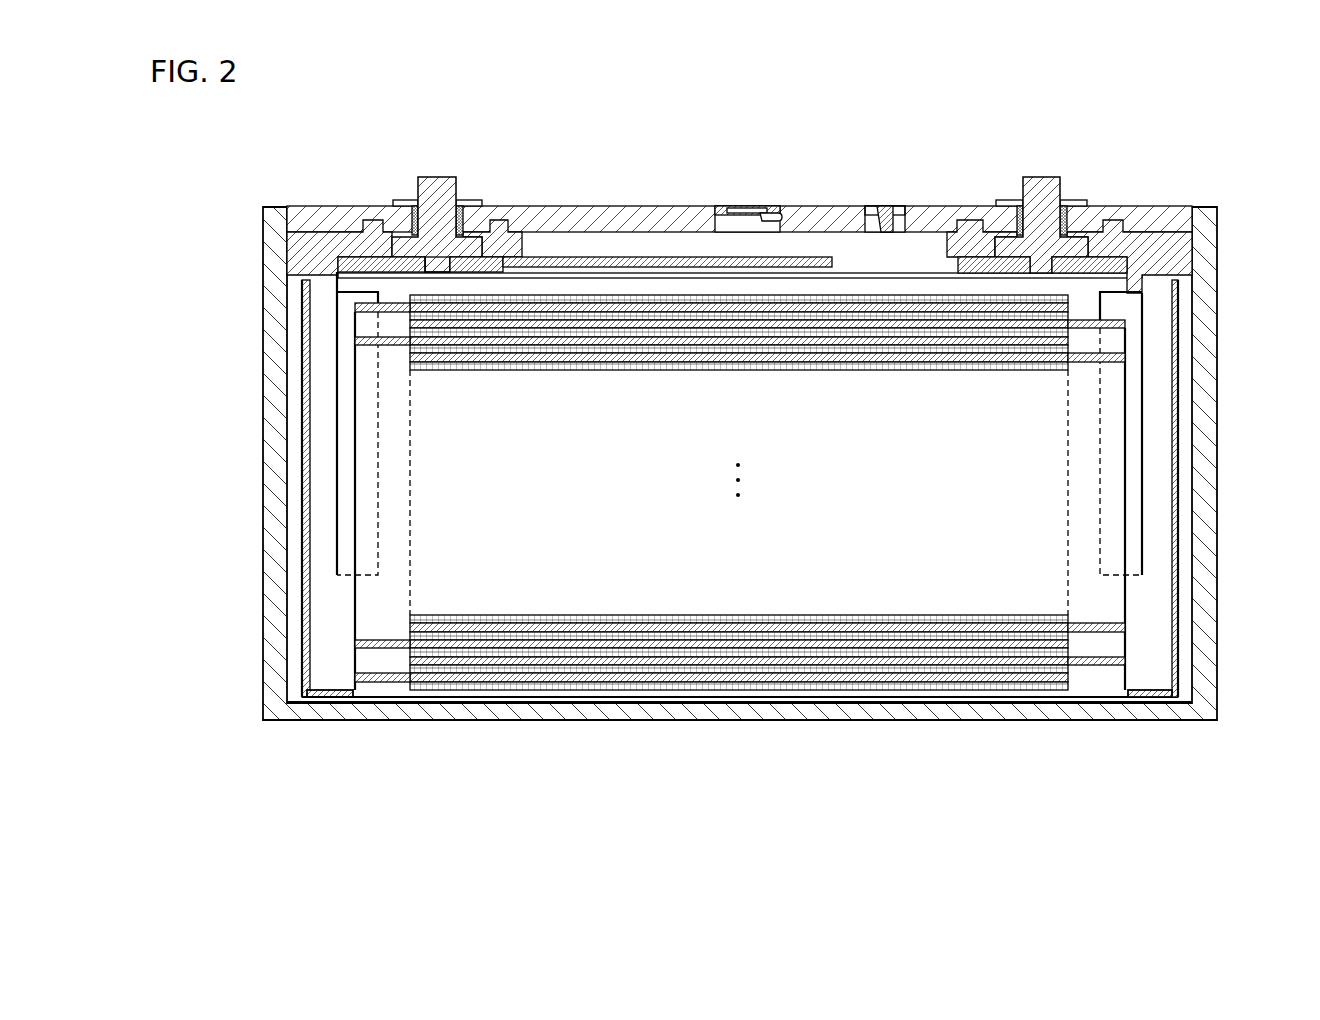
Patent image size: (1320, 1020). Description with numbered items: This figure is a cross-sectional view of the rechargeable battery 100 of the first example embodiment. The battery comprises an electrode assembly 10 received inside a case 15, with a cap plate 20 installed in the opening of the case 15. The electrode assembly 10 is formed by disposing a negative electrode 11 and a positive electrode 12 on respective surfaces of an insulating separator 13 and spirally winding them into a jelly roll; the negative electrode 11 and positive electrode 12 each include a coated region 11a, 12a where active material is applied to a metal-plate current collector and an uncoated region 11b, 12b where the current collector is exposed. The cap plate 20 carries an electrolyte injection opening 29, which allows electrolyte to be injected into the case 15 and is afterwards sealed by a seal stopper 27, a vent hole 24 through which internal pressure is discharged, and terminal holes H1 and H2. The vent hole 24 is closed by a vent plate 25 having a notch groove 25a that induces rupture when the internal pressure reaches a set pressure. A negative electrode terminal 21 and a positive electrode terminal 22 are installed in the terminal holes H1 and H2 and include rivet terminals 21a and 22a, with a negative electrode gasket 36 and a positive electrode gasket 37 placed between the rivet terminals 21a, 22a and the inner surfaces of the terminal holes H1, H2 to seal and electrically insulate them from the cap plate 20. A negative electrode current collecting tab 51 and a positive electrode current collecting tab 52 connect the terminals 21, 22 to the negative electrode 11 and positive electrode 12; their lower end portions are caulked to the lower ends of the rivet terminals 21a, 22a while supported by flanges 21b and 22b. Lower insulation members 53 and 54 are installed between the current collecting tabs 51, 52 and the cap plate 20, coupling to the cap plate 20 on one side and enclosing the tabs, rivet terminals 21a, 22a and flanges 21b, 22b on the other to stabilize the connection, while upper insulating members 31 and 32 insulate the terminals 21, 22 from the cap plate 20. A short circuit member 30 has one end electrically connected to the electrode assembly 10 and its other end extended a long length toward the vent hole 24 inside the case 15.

The rechargeable battery 100 is at (660, 85).
The electrode assembly 10 is at (660, 482).
The negative electrode 11 is at (355, 552).
The coated region 11a is at (355, 778).
The uncoated region 11b is at (355, 308).
The positive electrode 12 is at (1037, 565).
The coated region 12a is at (968, 660).
The uncoated region 12b is at (1096, 564).
The separator 13 is at (620, 295).
The case 15 is at (1213, 462).
The cap plate 20 is at (817, 208).
The negative electrode terminal 21 is at (447, 170).
The rivet terminal 21a is at (438, 262).
The flange 21b is at (497, 270).
The positive electrode terminal 22 is at (1050, 170).
The rivet terminal 22a is at (1043, 266).
The flange 22b is at (997, 262).
The vent hole 24 is at (763, 212).
The vent plate 25 is at (714, 209).
The notch groove 25a is at (730, 208).
The seal stopper 27 is at (889, 212).
The electrolyte injection opening 29 is at (868, 212).
The short circuit member 30 is at (741, 276).
The upper insulating member 31 is at (477, 204).
The upper insulating member 32 is at (1072, 203).
The negative electrode gasket 36 is at (413, 218).
The positive electrode gasket 37 is at (1016, 212).
The negative electrode current collecting tab 51 is at (322, 465).
The positive electrode current collecting tab 52 is at (1155, 528).
The lower insulation member 53 is at (300, 252).
The lower insulation member 54 is at (1180, 248).
The terminal hole H1 is at (424, 209).
The terminal hole H2 is at (1029, 209).